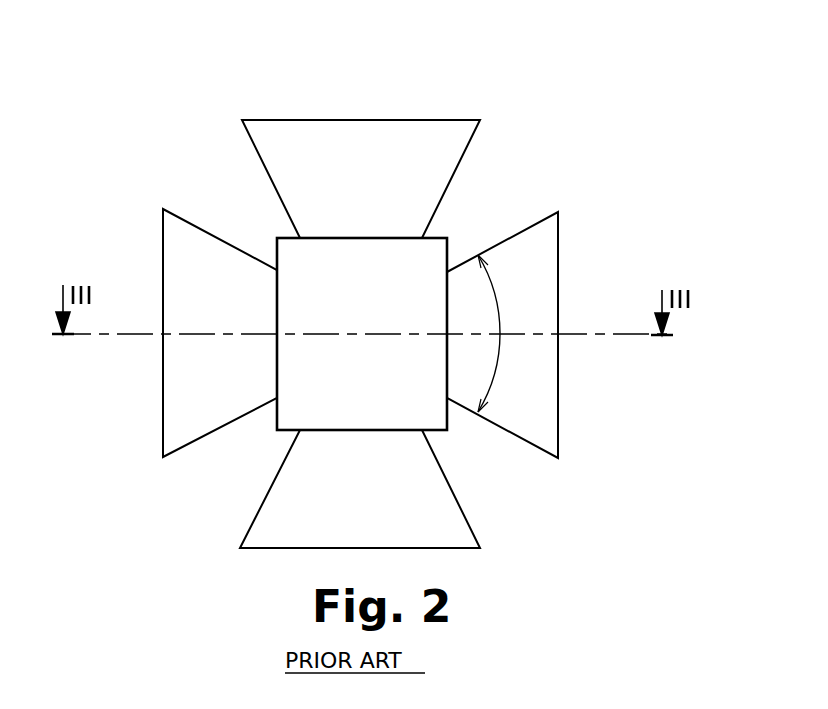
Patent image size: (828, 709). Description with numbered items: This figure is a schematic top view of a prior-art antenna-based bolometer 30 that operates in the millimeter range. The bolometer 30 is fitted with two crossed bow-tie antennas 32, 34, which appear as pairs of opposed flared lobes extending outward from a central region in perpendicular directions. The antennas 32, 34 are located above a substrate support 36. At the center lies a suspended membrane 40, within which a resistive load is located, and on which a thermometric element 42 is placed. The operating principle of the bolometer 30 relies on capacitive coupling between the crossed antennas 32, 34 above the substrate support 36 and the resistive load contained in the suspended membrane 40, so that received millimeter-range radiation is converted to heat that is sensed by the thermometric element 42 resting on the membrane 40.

The antenna-based bolometer 30 is at (370, 290).
The bow-tie antenna 32 is at (432, 142).
The bow-tie antenna 34 is at (547, 283).
The substrate support 36 is at (354, 78).
The suspended membrane 40 is at (273, 416).
The thermometric element 42 is at (435, 256).